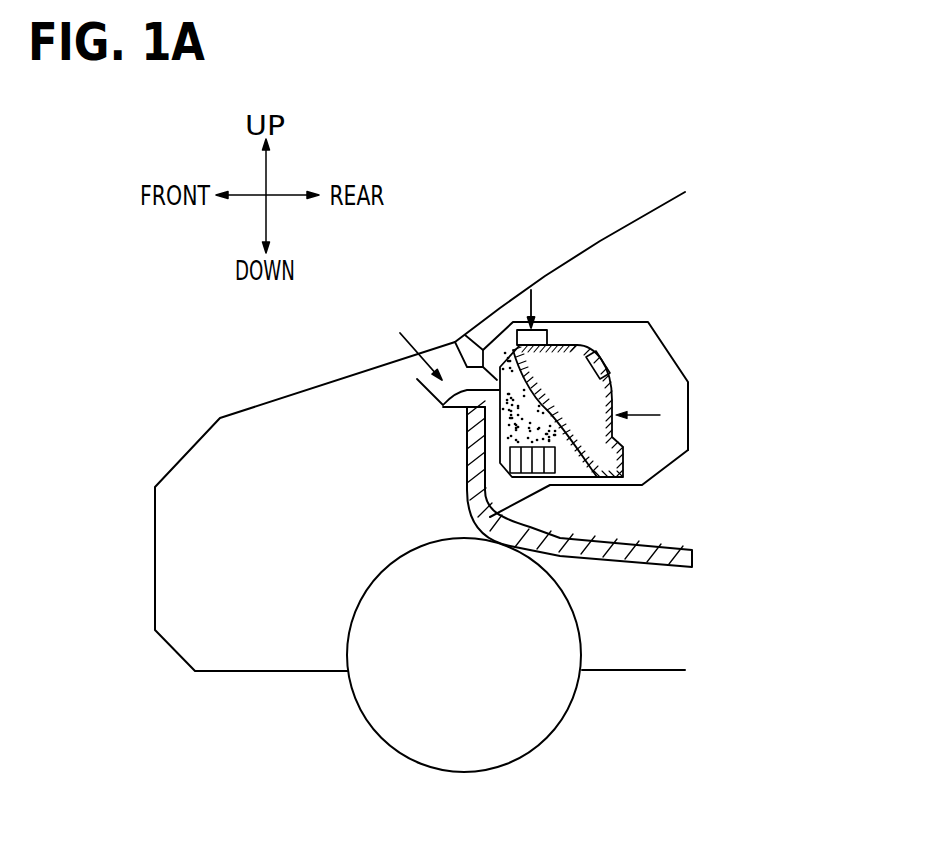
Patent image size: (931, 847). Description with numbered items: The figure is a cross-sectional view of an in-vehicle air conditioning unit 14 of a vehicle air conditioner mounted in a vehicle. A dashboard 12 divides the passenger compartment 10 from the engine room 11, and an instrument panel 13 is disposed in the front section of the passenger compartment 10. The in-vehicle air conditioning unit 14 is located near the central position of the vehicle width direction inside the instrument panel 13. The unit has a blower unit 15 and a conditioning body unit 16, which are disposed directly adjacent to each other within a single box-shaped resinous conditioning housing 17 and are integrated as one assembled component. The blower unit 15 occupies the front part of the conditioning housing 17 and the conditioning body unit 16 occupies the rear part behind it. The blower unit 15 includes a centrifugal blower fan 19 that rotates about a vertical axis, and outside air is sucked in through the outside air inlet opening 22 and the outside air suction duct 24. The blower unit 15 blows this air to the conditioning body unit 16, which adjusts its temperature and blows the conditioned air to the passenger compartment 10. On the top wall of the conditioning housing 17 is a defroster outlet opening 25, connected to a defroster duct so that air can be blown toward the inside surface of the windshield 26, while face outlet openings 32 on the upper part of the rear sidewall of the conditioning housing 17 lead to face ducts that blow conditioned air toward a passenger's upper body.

The passenger compartment 10 is at (700, 492).
The engine room 11 is at (247, 495).
The dashboard 12 is at (467, 490).
The instrument panel 13 is at (658, 330).
The in-vehicle air conditioning unit 14 is at (627, 415).
The blower unit 15 is at (513, 437).
The conditioning body unit 16 is at (565, 380).
The conditioning housing 17 is at (613, 393).
The centrifugal blower fan 19 is at (527, 470).
The outside air inlet opening 22 is at (460, 403).
The outside air suction duct 24 is at (417, 379).
The defroster outlet opening 25 is at (527, 318).
The windshield 26 is at (555, 262).
The face outlet openings 32 is at (610, 358).